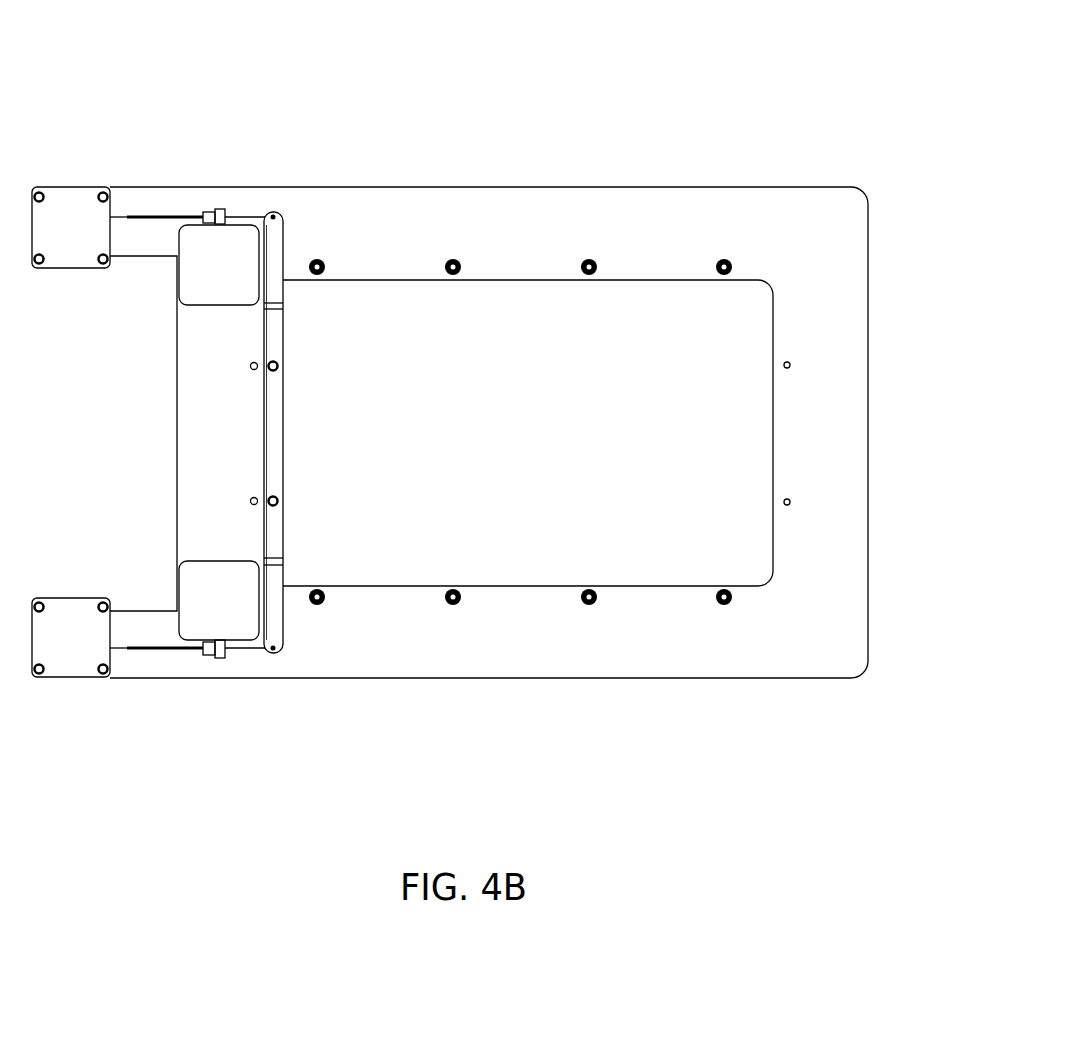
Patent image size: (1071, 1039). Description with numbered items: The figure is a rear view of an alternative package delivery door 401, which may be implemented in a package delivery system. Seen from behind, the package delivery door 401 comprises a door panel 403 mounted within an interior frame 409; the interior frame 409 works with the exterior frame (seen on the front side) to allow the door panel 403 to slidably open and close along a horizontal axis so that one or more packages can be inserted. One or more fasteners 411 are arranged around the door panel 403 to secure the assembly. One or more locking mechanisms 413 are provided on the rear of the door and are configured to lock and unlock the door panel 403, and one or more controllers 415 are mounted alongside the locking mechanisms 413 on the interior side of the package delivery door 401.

The package delivery door 401 is at (116, 52).
The door panel 403 is at (680, 411).
The interior frame 409 is at (78, 652).
The fastener 411 is at (317, 607).
The locking mechanism 413 is at (148, 239).
The controller 415 is at (240, 255).